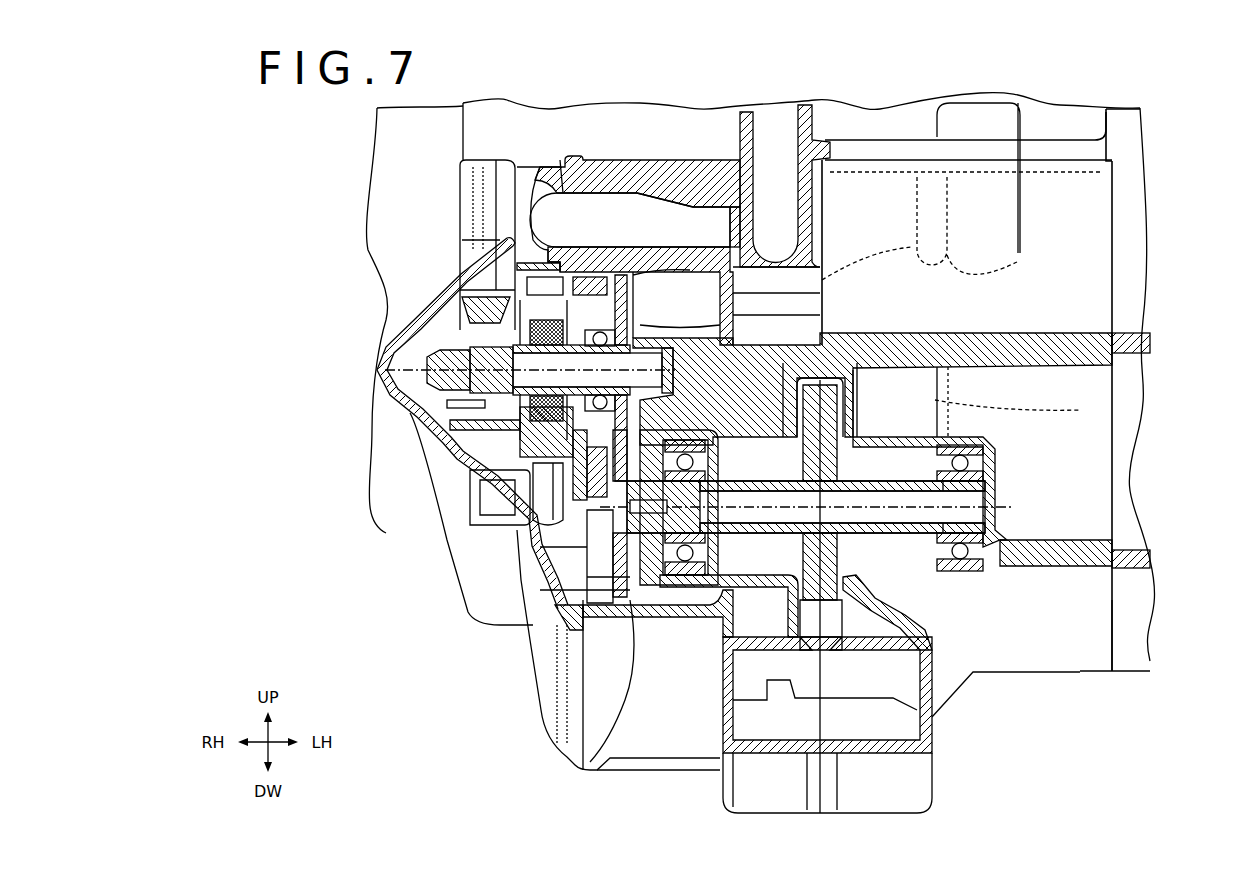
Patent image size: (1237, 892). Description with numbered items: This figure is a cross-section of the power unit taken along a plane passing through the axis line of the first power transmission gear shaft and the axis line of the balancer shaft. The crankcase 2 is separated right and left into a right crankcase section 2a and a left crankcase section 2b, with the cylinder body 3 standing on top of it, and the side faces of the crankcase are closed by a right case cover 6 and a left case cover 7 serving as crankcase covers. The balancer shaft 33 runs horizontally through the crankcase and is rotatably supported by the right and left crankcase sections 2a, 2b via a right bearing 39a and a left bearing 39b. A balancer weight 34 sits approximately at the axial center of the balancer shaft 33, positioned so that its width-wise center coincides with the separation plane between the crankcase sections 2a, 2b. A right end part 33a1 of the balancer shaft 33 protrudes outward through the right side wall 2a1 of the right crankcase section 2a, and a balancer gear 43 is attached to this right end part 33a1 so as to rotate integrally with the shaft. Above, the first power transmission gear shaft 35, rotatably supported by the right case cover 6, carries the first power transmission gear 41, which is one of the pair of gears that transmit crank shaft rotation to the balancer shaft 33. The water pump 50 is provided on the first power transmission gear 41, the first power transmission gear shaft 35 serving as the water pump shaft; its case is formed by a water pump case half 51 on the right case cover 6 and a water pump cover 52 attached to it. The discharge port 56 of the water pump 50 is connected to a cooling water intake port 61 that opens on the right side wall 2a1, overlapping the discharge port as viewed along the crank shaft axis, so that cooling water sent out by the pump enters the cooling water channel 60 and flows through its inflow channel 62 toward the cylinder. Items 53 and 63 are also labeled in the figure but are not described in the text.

The crankcase 2 is at (1046, 798).
The right crankcase section 2a is at (773, 787).
The left crankcase section 2b is at (900, 777).
The right side wall 2a1 is at (560, 213).
The cylinder body 3 is at (878, 116).
The right case cover 6 is at (547, 660).
The left case cover 7 is at (1128, 652).
The balancer shaft 33 is at (905, 535).
The right end part 33a1 is at (615, 522).
The balancer weight 34 is at (1080, 410).
The first power transmission gear shaft 35 is at (457, 346).
The right bearing 39a is at (690, 610).
The left bearing 39b is at (963, 575).
The first power transmission gear 41 is at (688, 290).
The balancer gear 43 is at (600, 560).
The water pump 50 is at (420, 304).
The water pump case half 51 is at (470, 487).
The water pump cover 52 is at (390, 395).
The seal member 53 is at (447, 453).
The discharge port 56 is at (570, 207).
The cooling water channel 60 is at (604, 229).
The cooling water intake port 61 is at (578, 270).
The inflow channel 62 is at (667, 225).
The vertical passage 63 is at (772, 122).